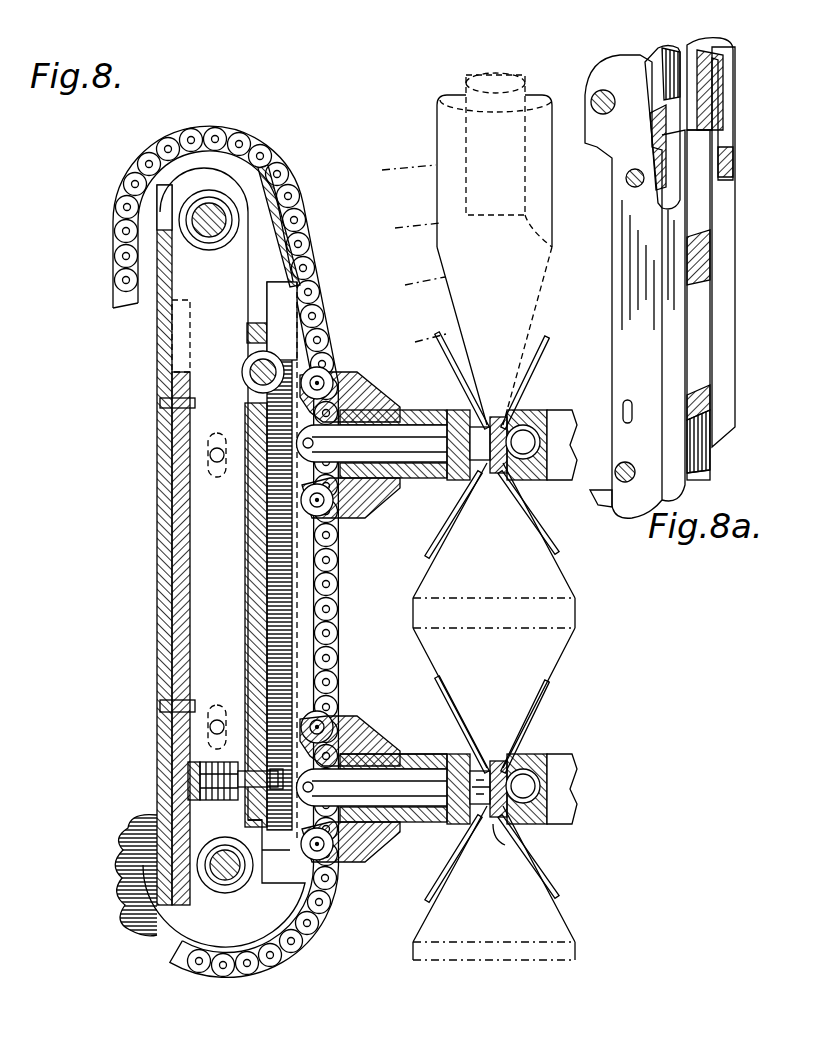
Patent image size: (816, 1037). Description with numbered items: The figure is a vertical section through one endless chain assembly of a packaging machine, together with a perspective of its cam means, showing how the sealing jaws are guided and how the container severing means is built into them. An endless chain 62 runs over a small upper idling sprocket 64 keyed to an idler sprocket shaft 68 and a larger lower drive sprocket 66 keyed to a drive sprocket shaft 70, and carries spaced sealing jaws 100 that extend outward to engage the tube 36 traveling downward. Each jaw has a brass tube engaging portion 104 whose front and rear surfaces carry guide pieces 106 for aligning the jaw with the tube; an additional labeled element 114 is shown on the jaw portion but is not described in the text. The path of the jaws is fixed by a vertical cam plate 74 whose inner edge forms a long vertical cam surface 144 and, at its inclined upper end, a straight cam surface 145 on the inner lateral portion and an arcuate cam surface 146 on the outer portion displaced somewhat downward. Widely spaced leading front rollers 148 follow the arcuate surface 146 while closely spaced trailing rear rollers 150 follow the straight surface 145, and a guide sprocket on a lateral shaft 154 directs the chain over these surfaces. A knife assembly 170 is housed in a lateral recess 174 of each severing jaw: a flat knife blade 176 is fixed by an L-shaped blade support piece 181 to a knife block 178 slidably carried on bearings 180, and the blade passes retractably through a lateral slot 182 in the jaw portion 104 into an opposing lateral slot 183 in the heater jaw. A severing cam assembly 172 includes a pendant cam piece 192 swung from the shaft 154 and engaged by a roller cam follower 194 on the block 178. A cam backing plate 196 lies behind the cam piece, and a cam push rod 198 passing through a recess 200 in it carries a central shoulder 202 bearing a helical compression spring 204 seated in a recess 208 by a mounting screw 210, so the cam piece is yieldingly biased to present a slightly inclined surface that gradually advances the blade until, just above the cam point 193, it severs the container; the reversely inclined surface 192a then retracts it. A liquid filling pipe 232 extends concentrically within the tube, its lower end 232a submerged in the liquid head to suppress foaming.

In FIG. 8, the tube 36 is at (535, 315).
In FIG. 8, the endless chain 62 is at (303, 240).
In FIG. 8, the upper idling sprocket 64 is at (184, 165).
In FIG. 8, the lower drive sprocket 66 is at (182, 927).
In FIG. 8, the idler sprocket shaft 68 is at (200, 223).
In FIG. 8A, the idler sprocket shaft 68 is at (600, 112).
In FIG. 8, the drive sprocket shaft 70 is at (212, 873).
In FIG. 8A, the cam plate 74 is at (676, 25).
In FIG. 8, the sealing jaw 100 is at (406, 168).
In FIG. 8, the tube engaging portion 104 is at (562, 412).
In FIG. 8, the guide piece 106 is at (547, 340).
In FIG. 8, the pin hole 114 is at (530, 450).
In FIG. 8, the vertical cam surface 144 is at (307, 640).
In FIG. 8, the straight cam surface 145 is at (300, 263).
In FIG. 8A, the straight cam surface 145 is at (705, 88).
In FIG. 8, the arcuate cam surface 146 is at (335, 338).
In FIG. 8A, the arcuate cam surface 146 is at (728, 152).
In FIG. 8, the front roller 148 is at (303, 512).
In FIG. 8, the rear roller 150 is at (300, 392).
In FIG. 8, the lateral shaft 154 is at (255, 372).
In FIG. 8A, the lateral shaft 154 is at (632, 185).
In FIG. 8, the knife assembly 170 is at (376, 757).
In FIG. 8, the severing cam assembly 172 is at (312, 552).
In FIG. 8, the lateral recess 174 is at (390, 760).
In FIG. 8, the knife blade 176 is at (462, 480).
In FIG. 8, the knife block 178 is at (410, 447).
In FIG. 8, the bearings 180 is at (432, 400).
In FIG. 8, the blade support piece 181 is at (482, 765).
In FIG. 8, the lateral slot 182 is at (492, 790).
In FIG. 8, the lateral slot 183 is at (500, 473).
In FIG. 8, the pendant cam piece 192 is at (288, 578).
In FIG. 8A, the pendant cam piece 192 is at (705, 278).
In FIG. 8, the reversely inclined cam surface 192a is at (275, 893).
In FIG. 8A, the reversely inclined cam surface 192a is at (712, 403).
In FIG. 8, the cam point 193 is at (308, 718).
In FIG. 8A, the cam point 193 is at (712, 392).
In FIG. 8, the cam follower 194 is at (303, 470).
In FIG. 8A, the cam follower 194 is at (722, 232).
In FIG. 8, the cam backing plate 196 is at (247, 572).
In FIG. 8, the cam push rod 198 is at (182, 766).
In FIG. 8, the recess 200 is at (250, 772).
In FIG. 8, the central shoulder 202 is at (240, 803).
In FIG. 8, the helical compression spring 204 is at (195, 790).
In FIG. 8, the recess 208 is at (188, 753).
In FIG. 8, the mounting screw 210 is at (162, 777).
In FIG. 8, the liquid filling pipe 232 is at (462, 90).
In FIG. 8, the lower end of filling pipe 232a is at (537, 232).